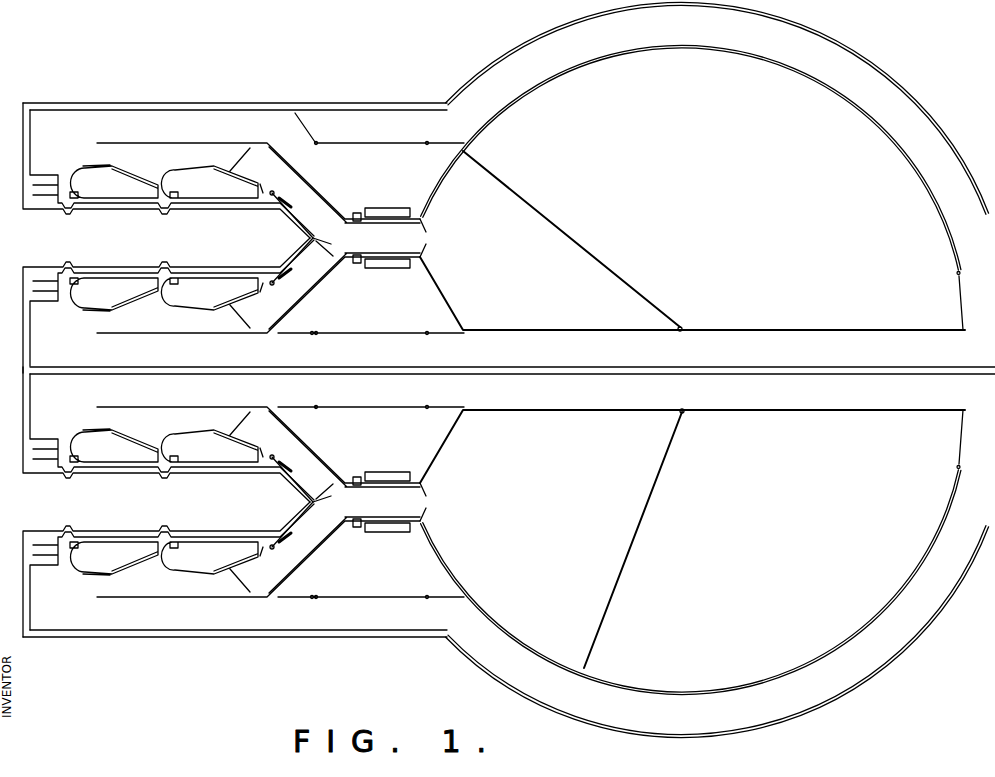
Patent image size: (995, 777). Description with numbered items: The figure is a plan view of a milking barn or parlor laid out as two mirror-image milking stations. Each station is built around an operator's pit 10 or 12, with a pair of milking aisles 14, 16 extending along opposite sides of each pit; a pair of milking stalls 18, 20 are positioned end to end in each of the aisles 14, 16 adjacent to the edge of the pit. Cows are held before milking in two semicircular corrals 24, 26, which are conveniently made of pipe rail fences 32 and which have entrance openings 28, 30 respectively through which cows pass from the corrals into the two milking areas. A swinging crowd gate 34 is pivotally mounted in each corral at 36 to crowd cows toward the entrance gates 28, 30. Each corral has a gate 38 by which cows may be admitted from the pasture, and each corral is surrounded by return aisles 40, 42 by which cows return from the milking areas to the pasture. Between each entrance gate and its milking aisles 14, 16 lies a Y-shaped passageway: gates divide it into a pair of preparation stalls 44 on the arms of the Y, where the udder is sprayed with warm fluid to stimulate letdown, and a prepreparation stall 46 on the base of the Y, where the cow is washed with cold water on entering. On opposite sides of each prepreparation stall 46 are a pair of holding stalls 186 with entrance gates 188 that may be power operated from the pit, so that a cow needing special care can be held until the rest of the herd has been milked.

The operator's pit 10 is at (186, 251).
The operator's pit 12 is at (169, 518).
The milking aisle 14 is at (166, 166).
The milking aisle 16 is at (185, 329).
The milking stall 18 is at (126, 194).
The milking stall 20 is at (228, 195).
The semicircular corral 24 is at (729, 195).
The semicircular corral 26 is at (779, 538).
The entrance opening 28 is at (440, 239).
The entrance opening 30 is at (433, 503).
The pipe rail fence 32 is at (607, 62).
The swinging crowd gate 34 is at (590, 247).
The pivot 36 is at (681, 326).
The gate 38 is at (957, 282).
The return aisle 40 is at (694, 40).
The return aisle 42 is at (683, 360).
The preparation stall 44 is at (310, 207).
The prepreparation stall 46 is at (381, 243).
The holding stall 186 is at (388, 158).
The entrance gate 188 is at (309, 125).